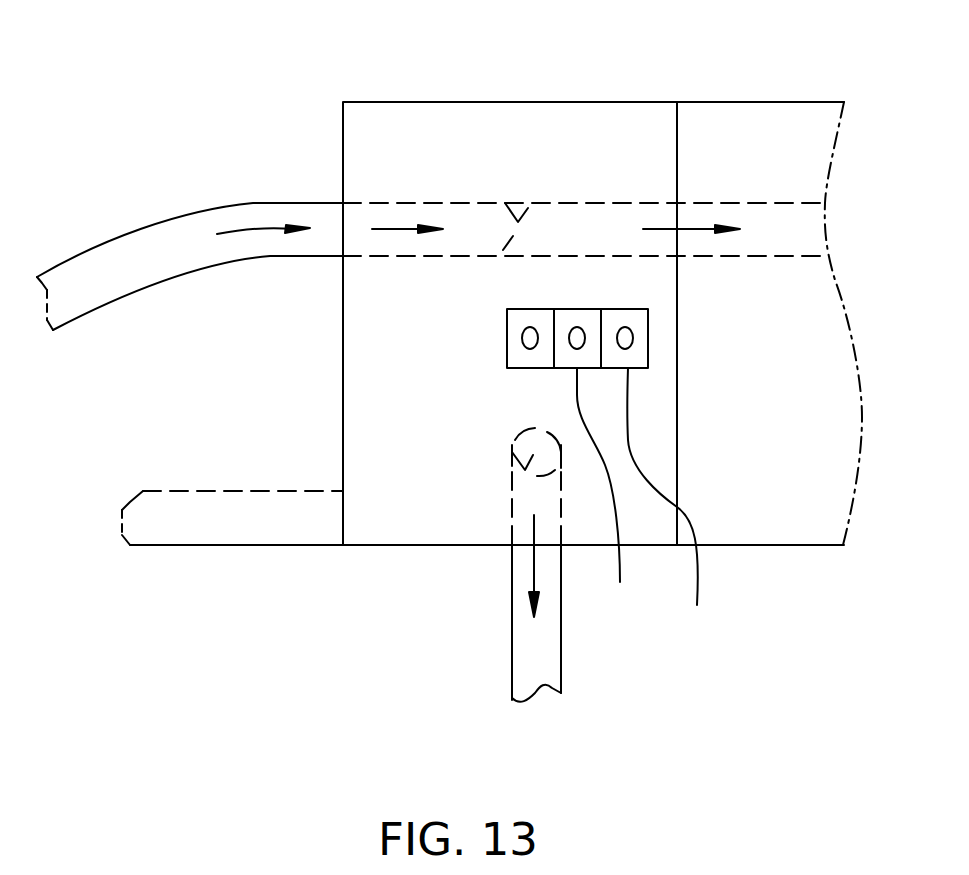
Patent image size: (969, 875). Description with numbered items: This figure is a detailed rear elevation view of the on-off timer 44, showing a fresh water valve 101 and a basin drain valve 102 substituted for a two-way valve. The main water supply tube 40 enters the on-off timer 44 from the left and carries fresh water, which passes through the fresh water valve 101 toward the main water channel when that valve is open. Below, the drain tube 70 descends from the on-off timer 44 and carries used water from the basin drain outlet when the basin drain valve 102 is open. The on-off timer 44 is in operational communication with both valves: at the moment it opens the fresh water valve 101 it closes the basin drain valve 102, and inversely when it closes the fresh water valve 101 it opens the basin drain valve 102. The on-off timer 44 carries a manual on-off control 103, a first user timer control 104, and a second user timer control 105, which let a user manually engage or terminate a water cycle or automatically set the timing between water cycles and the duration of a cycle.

The main water supply tube 40 is at (208, 208).
The on-off timer 44 is at (565, 102).
The drain tube 70 is at (512, 625).
The fresh water valve 101 is at (505, 203).
The basin drain valve 102 is at (538, 446).
The manual on-off control 103 is at (507, 329).
The first user timer control 104 is at (617, 498).
The second user timer control 105 is at (677, 509).